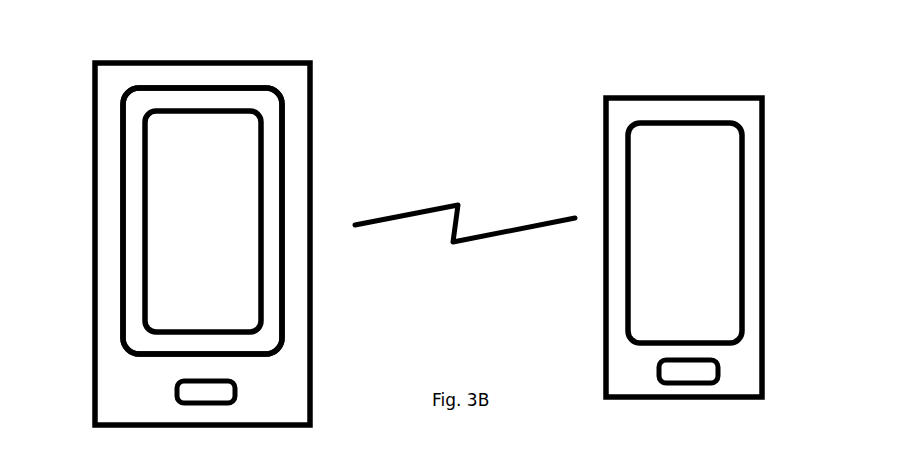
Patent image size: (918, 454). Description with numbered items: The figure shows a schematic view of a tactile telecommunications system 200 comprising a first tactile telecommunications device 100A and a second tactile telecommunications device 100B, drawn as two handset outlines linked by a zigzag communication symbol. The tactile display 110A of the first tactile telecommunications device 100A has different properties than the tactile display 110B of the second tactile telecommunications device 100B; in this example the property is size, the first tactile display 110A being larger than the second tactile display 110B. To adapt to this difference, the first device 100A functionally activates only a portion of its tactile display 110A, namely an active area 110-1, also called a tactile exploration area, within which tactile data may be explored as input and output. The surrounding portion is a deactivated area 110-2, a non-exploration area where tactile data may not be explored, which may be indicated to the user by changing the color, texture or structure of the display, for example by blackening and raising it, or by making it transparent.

The tactile telecommunications system 200 is at (74, 70).
The first tactile telecommunications device 100A is at (310, 86).
The tactile display of the first tactile telecommunications device 110A is at (284, 332).
The active area 110-1 is at (245, 235).
The deactivated area 110-2 is at (273, 162).
The second tactile telecommunications device 100B is at (762, 132).
The tactile display of the second tactile telecommunications device 110B is at (742, 320).